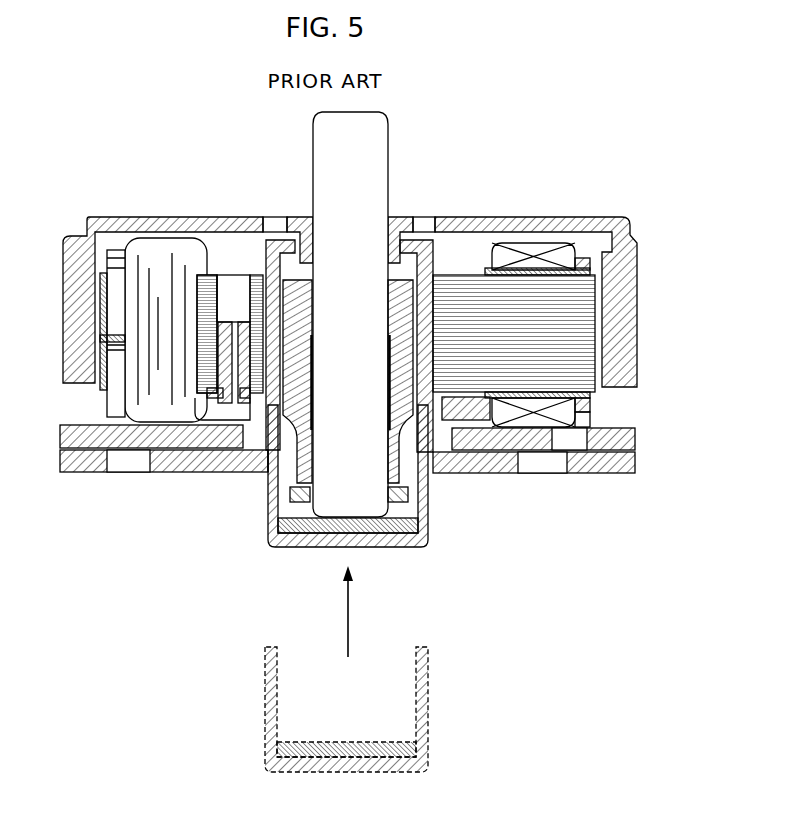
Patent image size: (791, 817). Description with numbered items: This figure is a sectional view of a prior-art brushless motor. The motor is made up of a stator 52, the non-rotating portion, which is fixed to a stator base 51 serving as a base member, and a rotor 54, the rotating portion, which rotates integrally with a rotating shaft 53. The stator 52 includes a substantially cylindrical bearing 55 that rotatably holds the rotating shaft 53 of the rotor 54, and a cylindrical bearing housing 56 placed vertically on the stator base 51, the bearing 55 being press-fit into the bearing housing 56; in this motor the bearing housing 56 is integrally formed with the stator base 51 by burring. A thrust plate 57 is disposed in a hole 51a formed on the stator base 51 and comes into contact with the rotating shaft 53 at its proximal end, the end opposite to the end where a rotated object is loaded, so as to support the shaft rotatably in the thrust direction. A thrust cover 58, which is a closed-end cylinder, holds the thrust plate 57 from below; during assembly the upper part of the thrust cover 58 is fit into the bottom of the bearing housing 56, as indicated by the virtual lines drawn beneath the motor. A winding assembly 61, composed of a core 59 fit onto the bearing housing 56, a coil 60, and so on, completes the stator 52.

The stator base 51 is at (593, 463).
The hole 51a is at (285, 453).
The stator 52 is at (163, 499).
The rotating shaft 53 is at (333, 142).
The rotor 54 is at (146, 189).
The bearing 55 is at (457, 275).
The bearing housing 56 is at (428, 366).
The thrust plate 57 is at (305, 528).
The thrust cover 58 is at (402, 540).
The core 59 is at (468, 262).
The coil 60 is at (528, 247).
The winding assembly 61 is at (587, 244).